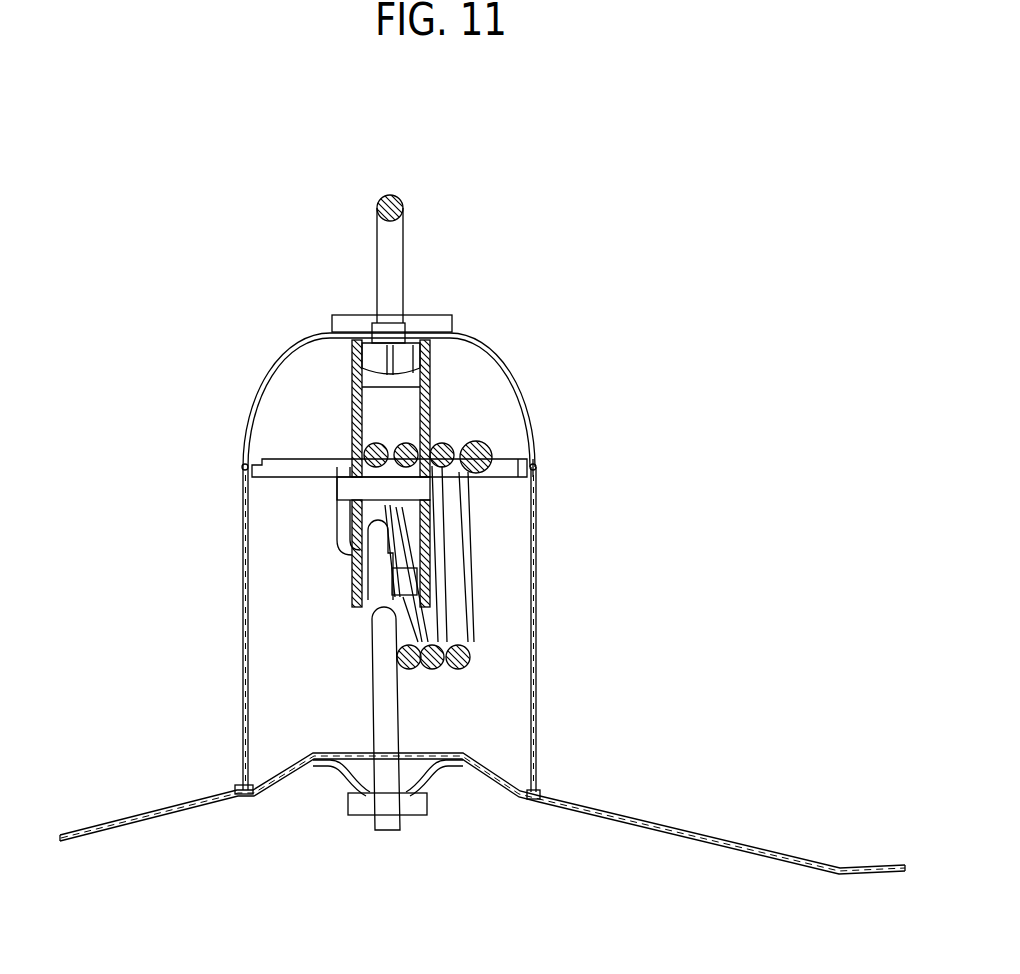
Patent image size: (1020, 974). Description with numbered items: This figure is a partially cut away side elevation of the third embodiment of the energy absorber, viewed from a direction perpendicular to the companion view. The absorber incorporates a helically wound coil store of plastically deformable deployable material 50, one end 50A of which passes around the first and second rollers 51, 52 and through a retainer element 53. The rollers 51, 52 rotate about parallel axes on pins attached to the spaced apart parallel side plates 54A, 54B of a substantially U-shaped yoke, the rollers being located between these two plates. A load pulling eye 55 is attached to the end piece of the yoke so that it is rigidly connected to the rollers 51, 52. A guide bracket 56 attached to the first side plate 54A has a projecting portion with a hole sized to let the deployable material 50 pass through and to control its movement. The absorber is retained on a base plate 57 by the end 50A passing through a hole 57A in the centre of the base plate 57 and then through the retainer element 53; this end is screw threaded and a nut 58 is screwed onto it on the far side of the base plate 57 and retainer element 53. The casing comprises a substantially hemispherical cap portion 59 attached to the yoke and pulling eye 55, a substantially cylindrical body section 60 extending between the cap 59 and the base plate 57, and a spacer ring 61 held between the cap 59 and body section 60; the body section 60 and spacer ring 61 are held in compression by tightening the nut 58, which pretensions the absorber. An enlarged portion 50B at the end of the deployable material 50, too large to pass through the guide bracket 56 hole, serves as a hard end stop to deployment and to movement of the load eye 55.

The deployable material 50 is at (455, 566).
The end of the deployable material 50A is at (387, 832).
The enlarged cross section portion 50B is at (485, 455).
The first roller 51 is at (332, 460).
The second roller 52 is at (372, 592).
The retainer element 53 is at (327, 768).
The first side plate 54A is at (352, 418).
The second side plate 54B is at (430, 412).
The load pulling eye 55 is at (392, 196).
The guide bracket 56 is at (345, 527).
The base plate 57 is at (85, 842).
The hole 57A is at (440, 783).
The nut 58 is at (363, 816).
The hemispherical cap portion 59 is at (293, 358).
The cylindrical body section 60 is at (240, 693).
The spacer ring 61 is at (533, 467).